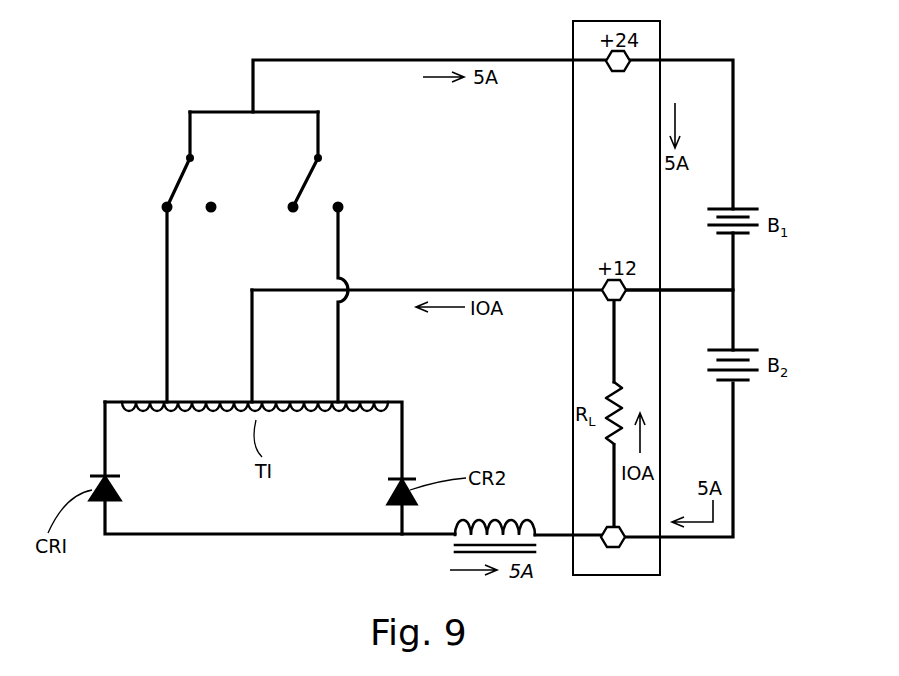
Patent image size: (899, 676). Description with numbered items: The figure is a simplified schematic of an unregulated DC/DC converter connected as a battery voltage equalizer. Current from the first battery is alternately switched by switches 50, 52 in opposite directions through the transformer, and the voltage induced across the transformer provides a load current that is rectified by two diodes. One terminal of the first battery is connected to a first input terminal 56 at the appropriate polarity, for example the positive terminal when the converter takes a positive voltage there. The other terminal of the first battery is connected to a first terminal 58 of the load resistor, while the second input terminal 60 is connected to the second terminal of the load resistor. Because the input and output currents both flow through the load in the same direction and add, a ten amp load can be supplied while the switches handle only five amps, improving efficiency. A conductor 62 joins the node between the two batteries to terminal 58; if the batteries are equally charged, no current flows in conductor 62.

The switch 50 is at (311, 185).
The switch 52 is at (178, 187).
The first input terminal 56 is at (611, 72).
The first terminal of the load 58 is at (630, 287).
The second input terminal 60 is at (616, 548).
The conductor 62 is at (668, 295).